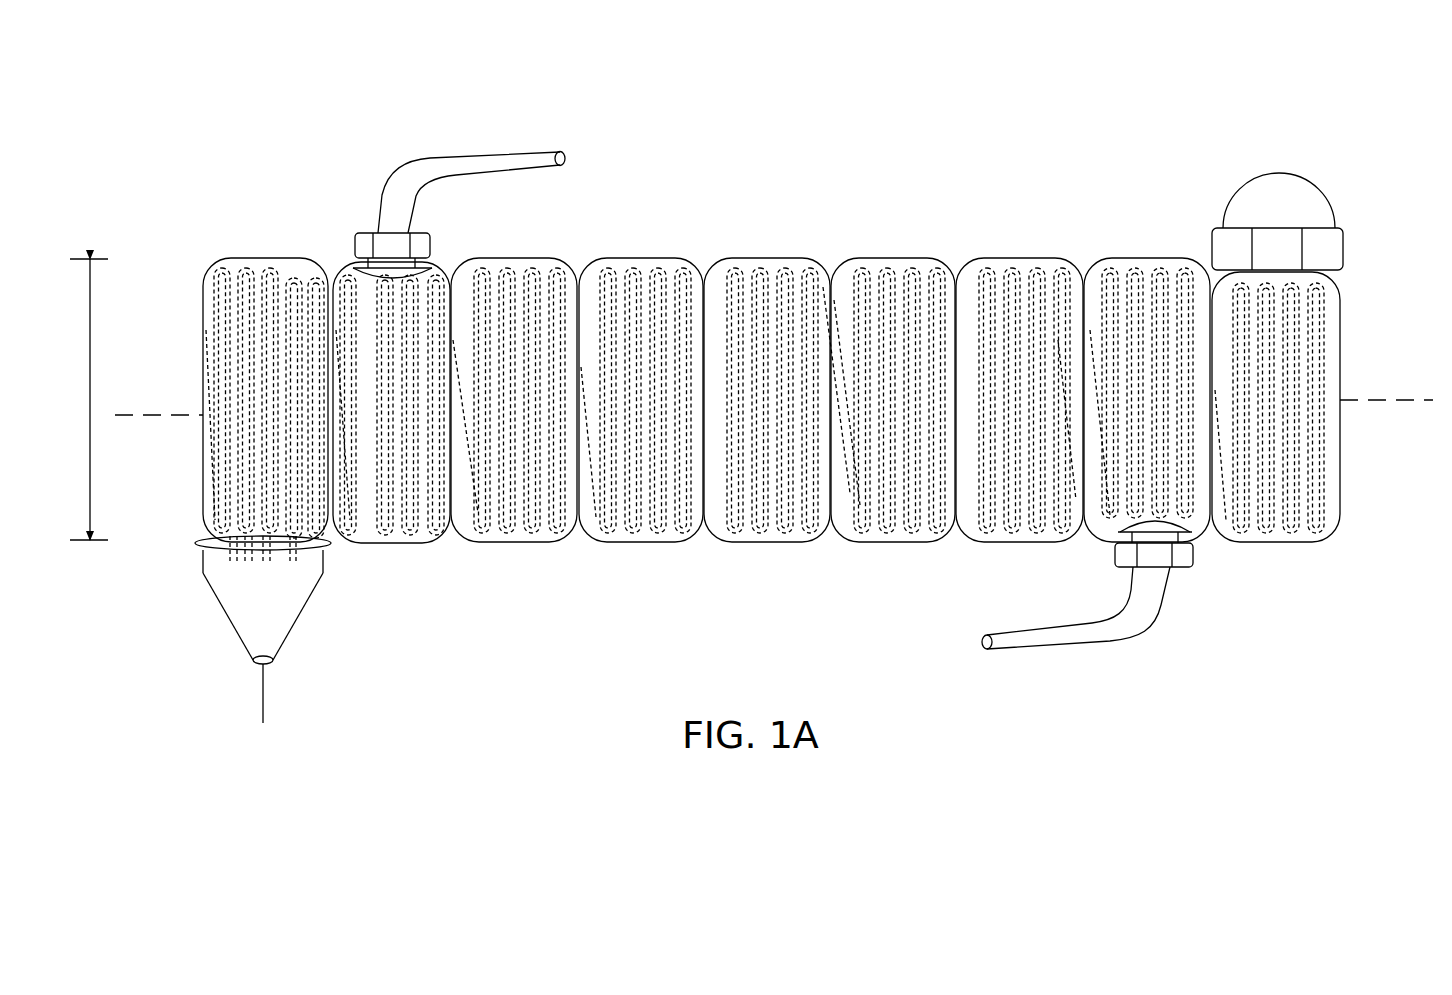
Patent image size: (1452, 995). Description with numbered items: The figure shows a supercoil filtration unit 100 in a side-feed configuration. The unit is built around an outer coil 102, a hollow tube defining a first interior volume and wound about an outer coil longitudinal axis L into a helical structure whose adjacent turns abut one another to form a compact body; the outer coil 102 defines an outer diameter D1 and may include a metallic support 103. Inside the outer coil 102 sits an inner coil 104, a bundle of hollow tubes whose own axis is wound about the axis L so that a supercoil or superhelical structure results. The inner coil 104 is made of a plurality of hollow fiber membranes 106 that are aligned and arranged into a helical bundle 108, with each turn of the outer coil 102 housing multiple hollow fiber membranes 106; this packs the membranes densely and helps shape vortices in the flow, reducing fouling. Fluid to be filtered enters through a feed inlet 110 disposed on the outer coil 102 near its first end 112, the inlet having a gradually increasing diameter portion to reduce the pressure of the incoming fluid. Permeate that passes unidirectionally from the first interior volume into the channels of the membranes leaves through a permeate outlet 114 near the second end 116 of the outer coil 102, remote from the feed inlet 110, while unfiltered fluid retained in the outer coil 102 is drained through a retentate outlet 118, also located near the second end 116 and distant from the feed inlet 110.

The supercoil filtration unit 100 is at (200, 110).
The outer coil 102 is at (955, 275).
The metallic support 103 is at (1328, 247).
The inner coil 104 is at (1000, 270).
The hollow fiber membranes 106 is at (743, 268).
The helical bundle 108 is at (513, 567).
The feed inlet 110 is at (1153, 597).
The first end 112 is at (1340, 297).
The permeate outlet 114 is at (228, 602).
The second end 116 is at (192, 278).
The retentate outlet 118 is at (445, 168).
The outer diameter D1 is at (90, 372).
The outer coil longitudinal axis L is at (1430, 402).